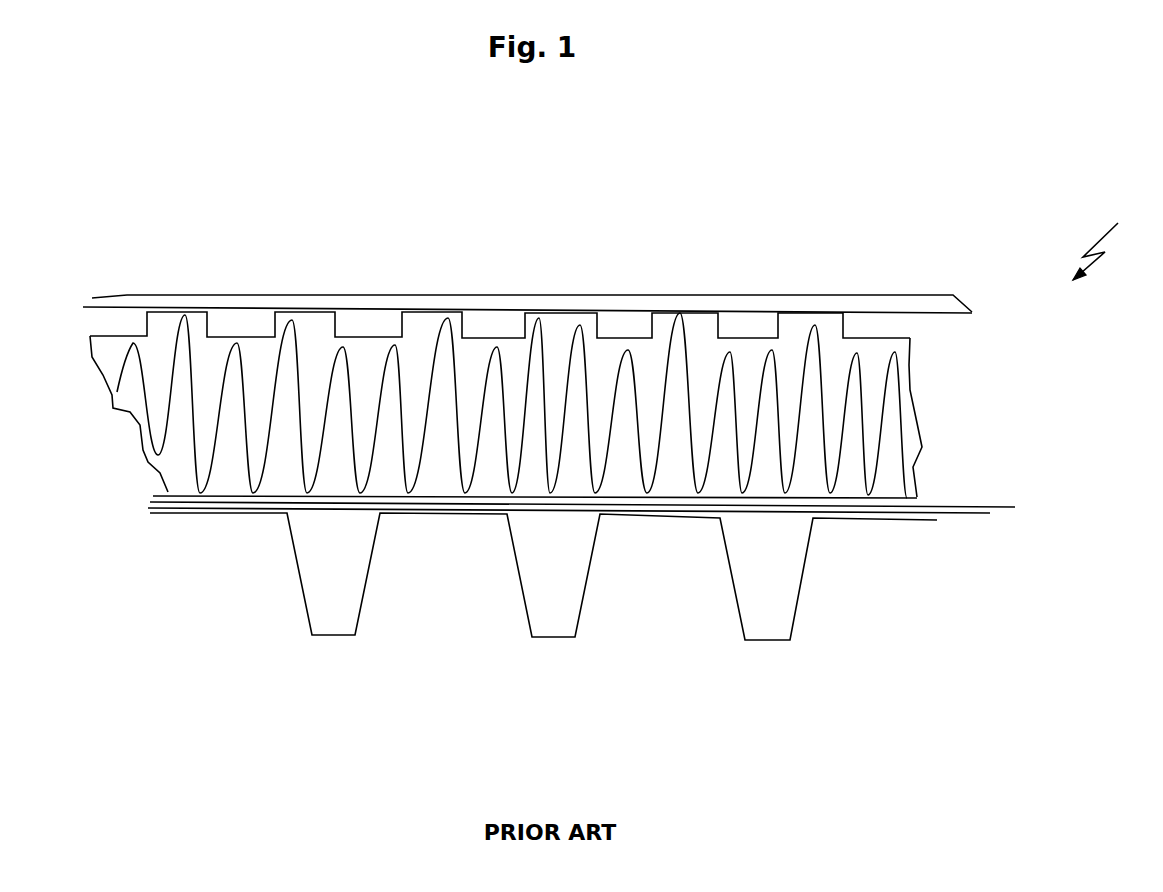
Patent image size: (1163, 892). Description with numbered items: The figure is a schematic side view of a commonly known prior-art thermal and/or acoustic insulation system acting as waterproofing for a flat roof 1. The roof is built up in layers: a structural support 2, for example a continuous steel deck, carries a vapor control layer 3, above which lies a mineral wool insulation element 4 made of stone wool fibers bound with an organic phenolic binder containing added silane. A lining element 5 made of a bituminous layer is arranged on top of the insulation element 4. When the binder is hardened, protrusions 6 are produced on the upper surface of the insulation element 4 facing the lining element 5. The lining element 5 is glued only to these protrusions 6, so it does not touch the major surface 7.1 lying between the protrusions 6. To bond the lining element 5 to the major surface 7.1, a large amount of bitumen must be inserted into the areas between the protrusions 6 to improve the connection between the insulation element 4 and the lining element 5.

The flat roof 1 is at (1110, 239).
The structural support 2 is at (898, 520).
The vapor control layer 3 is at (990, 513).
The insulation element 4 is at (175, 463).
The lining element 5 is at (892, 303).
The protrusions 6 is at (166, 320).
The major surface 7.1 is at (237, 338).